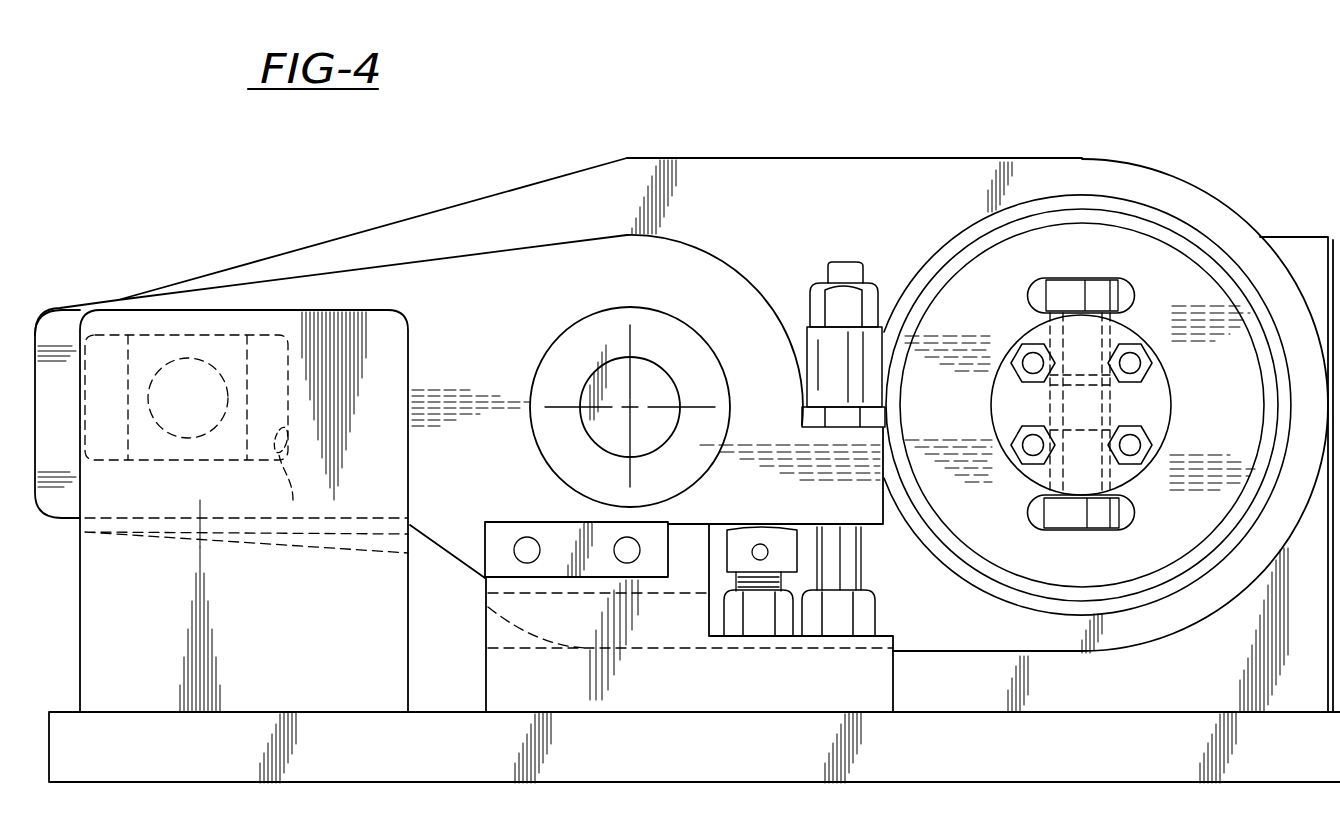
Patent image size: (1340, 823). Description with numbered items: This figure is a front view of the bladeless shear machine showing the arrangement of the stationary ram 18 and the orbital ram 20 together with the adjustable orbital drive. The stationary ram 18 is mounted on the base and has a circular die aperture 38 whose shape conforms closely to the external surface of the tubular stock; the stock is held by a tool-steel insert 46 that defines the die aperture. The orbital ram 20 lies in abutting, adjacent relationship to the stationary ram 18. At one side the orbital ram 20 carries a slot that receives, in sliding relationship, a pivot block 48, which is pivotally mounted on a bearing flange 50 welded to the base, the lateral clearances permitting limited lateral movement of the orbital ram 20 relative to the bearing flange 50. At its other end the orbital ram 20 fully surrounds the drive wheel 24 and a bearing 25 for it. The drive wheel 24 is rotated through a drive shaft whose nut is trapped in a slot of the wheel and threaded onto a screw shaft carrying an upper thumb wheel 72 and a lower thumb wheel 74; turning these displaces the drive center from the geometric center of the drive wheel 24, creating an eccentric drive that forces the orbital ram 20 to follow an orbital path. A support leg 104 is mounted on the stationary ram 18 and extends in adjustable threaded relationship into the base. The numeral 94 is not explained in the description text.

The stationary ram 18 is at (727, 248).
The orbital ram 20 is at (955, 158).
The drive wheel 24 is at (1205, 262).
The bearing 25 is at (1183, 225).
The circular die aperture 38 is at (592, 373).
The tool-steel insert 46 is at (293, 500).
The pivot block 48 is at (130, 363).
The bearing flange 50 is at (80, 598).
The upper thumb wheel 72 is at (1092, 290).
The lower thumb wheel 74 is at (1093, 521).
The opening 94 is at (203, 358).
The support leg 104 is at (870, 562).